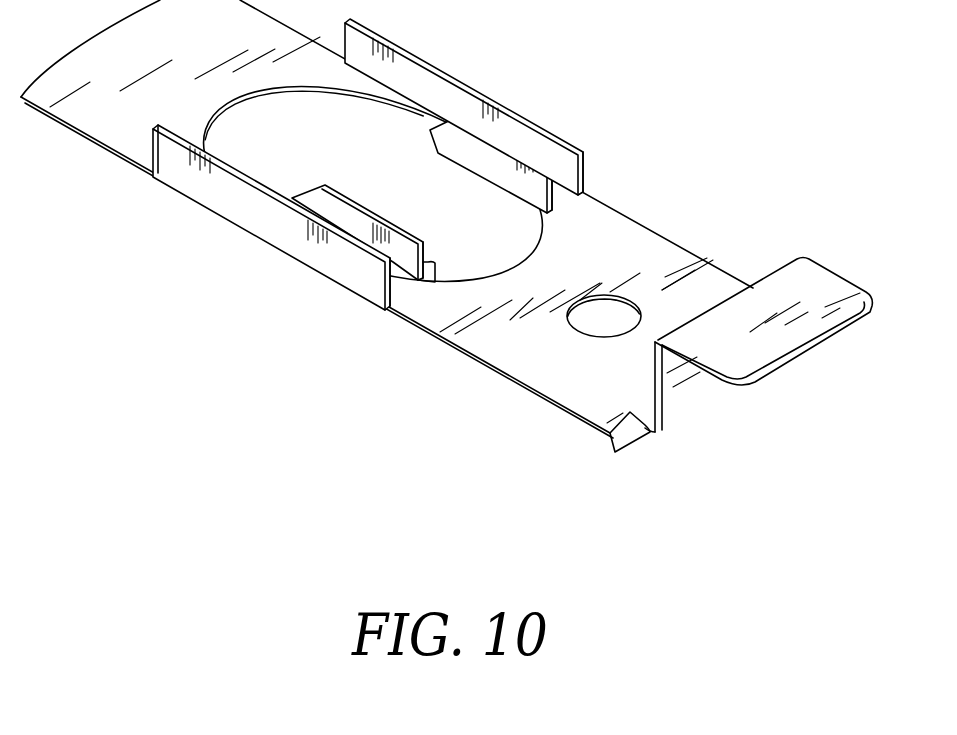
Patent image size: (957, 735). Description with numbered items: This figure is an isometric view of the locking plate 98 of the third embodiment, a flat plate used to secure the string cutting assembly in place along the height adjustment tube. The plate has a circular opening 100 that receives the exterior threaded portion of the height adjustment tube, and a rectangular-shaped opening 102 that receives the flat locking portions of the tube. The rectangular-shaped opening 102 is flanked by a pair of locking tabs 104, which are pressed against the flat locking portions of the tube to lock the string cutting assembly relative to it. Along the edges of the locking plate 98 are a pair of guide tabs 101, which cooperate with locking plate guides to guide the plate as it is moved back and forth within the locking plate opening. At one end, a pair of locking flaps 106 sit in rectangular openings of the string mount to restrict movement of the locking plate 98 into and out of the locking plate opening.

The locking plate 98 is at (825, 338).
The circular opening 100 is at (313, 151).
The guide tabs 101 is at (573, 190).
The rectangular-shaped opening 102 is at (490, 227).
The locking tabs 104 is at (535, 198).
The locking flaps 106 is at (608, 438).